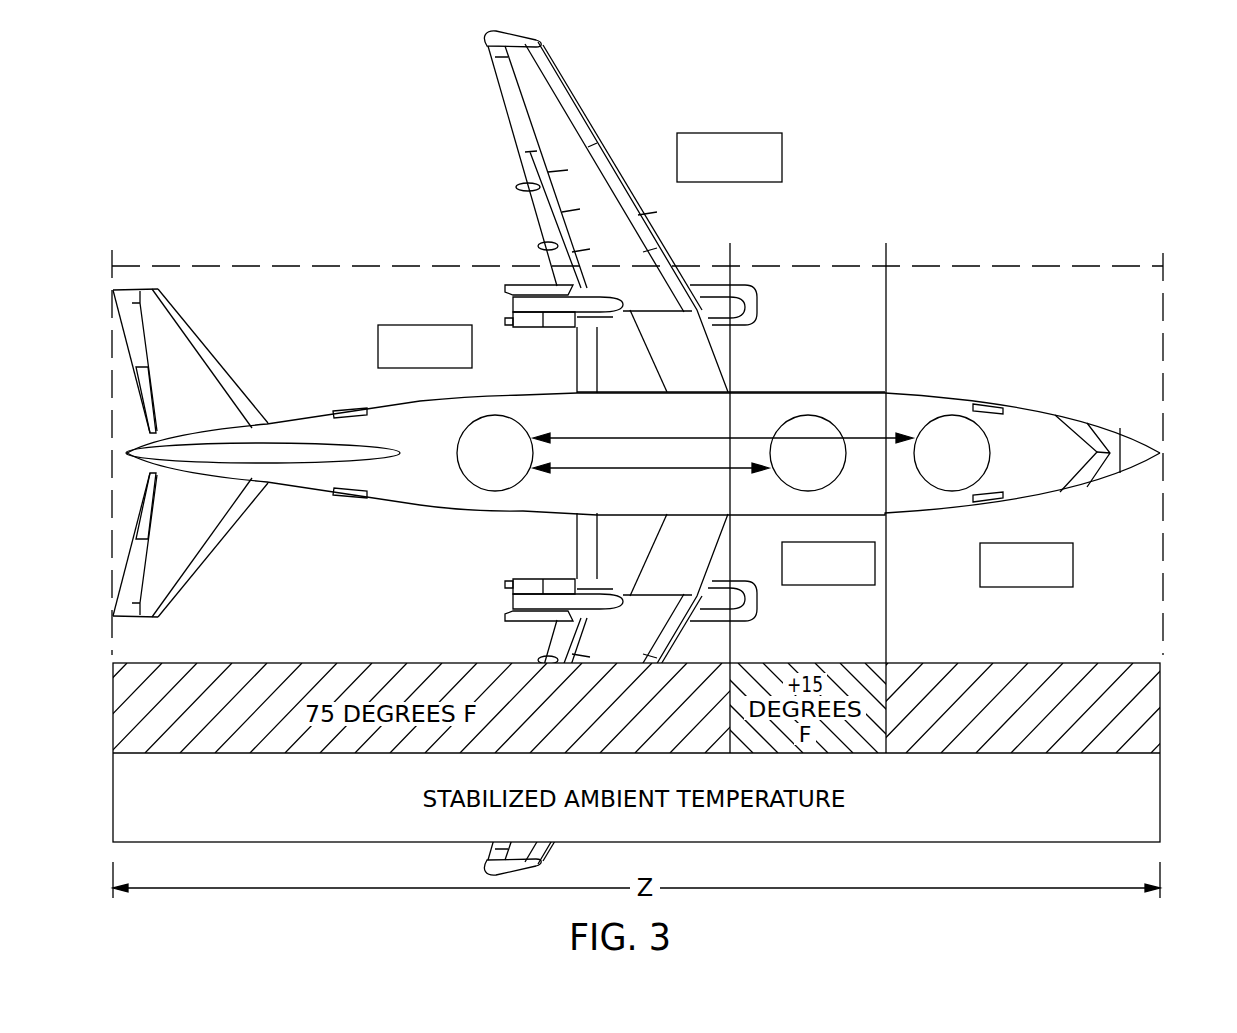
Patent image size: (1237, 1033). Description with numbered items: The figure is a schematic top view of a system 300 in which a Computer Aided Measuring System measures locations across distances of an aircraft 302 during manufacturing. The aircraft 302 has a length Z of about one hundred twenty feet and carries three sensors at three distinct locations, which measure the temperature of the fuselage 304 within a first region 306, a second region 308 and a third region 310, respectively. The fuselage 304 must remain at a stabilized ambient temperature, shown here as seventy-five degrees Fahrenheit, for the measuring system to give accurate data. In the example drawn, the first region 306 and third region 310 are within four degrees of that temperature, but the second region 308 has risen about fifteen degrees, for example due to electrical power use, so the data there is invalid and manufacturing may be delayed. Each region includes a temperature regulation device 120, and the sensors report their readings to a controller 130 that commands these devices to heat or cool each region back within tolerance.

The temperature regulation device 120 is at (406, 359).
The controller 130 is at (952, 415).
The system 300 is at (1000, 250).
The aircraft 302 is at (671, 453).
The fuselage 304 is at (1112, 420).
The first region 306 is at (318, 306).
The second region 308 is at (845, 343).
The third region 310 is at (1075, 293).